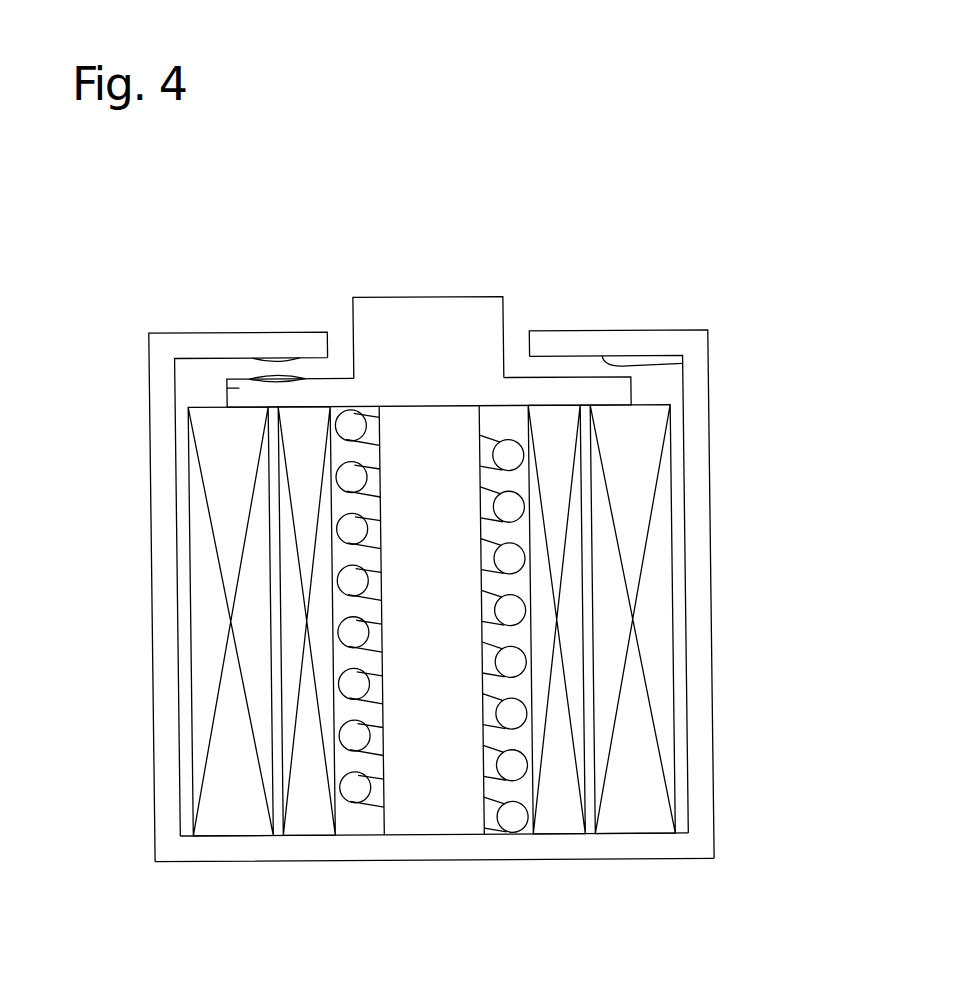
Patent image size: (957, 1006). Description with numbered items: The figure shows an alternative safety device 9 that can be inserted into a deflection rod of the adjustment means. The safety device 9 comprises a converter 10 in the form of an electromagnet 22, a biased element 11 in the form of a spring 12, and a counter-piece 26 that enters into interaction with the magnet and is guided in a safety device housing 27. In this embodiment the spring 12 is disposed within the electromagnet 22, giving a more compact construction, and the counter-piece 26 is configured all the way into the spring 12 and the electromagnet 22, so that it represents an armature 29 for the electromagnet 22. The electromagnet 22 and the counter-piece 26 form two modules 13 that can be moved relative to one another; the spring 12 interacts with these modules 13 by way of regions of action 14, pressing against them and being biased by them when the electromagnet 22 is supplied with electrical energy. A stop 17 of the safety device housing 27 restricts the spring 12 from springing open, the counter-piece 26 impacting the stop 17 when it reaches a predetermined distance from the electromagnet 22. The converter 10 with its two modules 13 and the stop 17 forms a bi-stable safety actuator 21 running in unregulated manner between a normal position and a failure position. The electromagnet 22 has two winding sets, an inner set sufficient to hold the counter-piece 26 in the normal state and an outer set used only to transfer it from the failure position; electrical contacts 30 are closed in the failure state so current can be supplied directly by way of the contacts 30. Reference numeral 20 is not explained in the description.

The safety device 9 is at (439, 565).
The piston 20 is at (505, 488).
The safety actuator 21 is at (411, 659).
The counter-piece 26 is at (558, 378).
The stop 17 is at (652, 365).
The electrical contacts 30 is at (258, 380).
The modules 13 is at (288, 425).
The regions of action 14 is at (345, 432).
The biased element 11 is at (350, 488).
The converter 10 is at (288, 547).
The spring 12 is at (517, 455).
The electromagnet 22 is at (648, 625).
The armature 29 is at (465, 672).
The safety device housing 27 is at (610, 847).